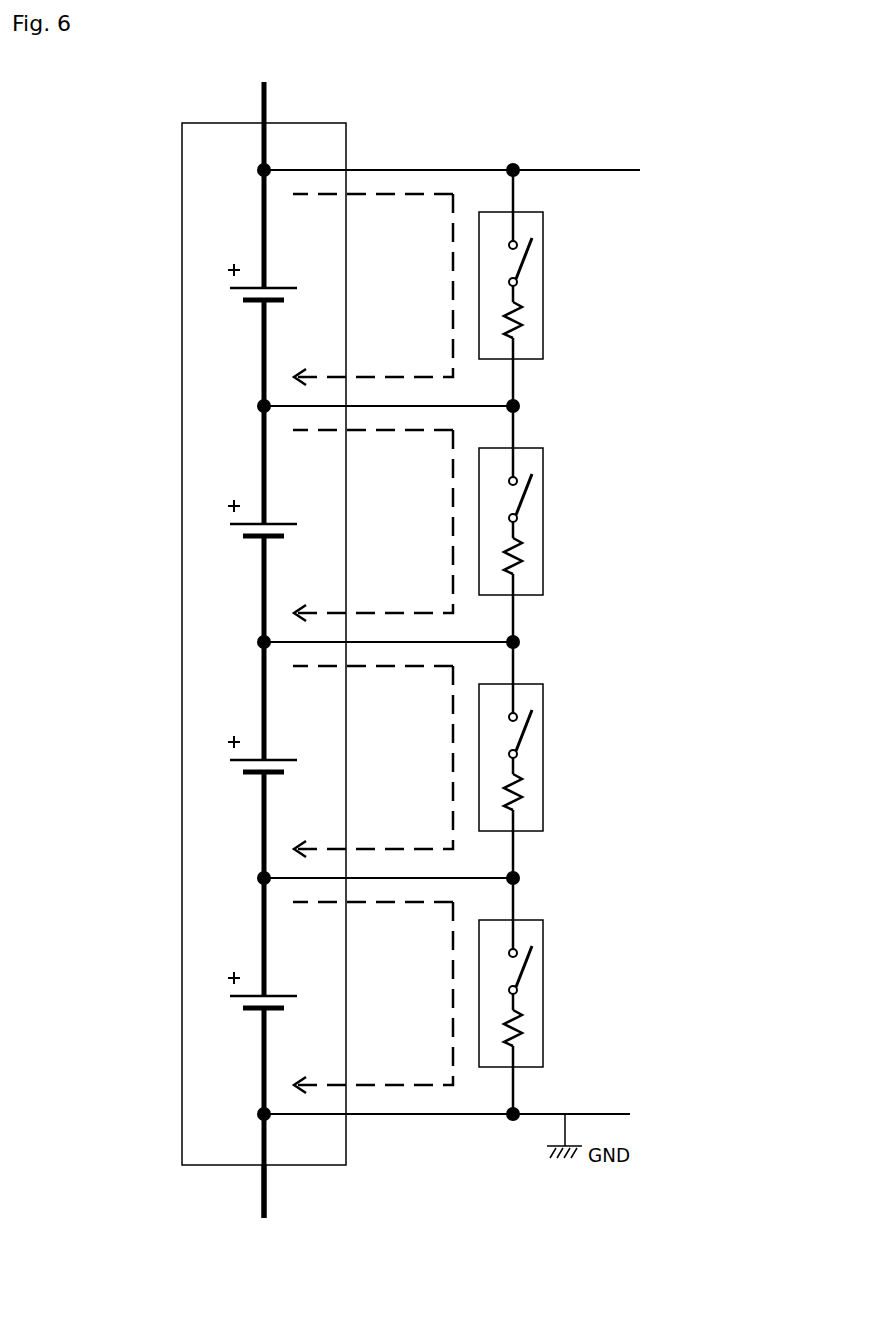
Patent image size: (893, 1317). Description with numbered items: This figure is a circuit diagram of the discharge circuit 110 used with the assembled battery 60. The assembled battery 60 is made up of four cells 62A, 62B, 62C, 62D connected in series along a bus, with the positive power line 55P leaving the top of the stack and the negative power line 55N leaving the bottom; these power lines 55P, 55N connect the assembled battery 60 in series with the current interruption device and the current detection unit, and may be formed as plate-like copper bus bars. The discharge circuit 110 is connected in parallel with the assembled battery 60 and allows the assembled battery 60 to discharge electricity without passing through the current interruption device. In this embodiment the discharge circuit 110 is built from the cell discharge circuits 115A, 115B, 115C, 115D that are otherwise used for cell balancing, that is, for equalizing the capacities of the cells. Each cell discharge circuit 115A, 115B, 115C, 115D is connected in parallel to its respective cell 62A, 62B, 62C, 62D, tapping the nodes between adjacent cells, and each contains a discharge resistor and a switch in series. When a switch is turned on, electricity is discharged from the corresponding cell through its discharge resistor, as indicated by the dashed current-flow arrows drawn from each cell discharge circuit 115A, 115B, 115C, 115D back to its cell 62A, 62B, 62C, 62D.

The assembled battery 60 is at (213, 123).
The power line 55P is at (267, 103).
The power line 55N is at (262, 1194).
The cell 62D is at (240, 292).
The cell 62C is at (240, 528).
The cell 62B is at (240, 764).
The cell 62A is at (240, 1000).
The discharge circuit 110 is at (631, 642).
The cell discharge circuit 115D is at (596, 288).
The cell discharge circuit 115C is at (596, 524).
The cell discharge circuit 115B is at (596, 760).
The cell discharge circuit 115A is at (596, 996).